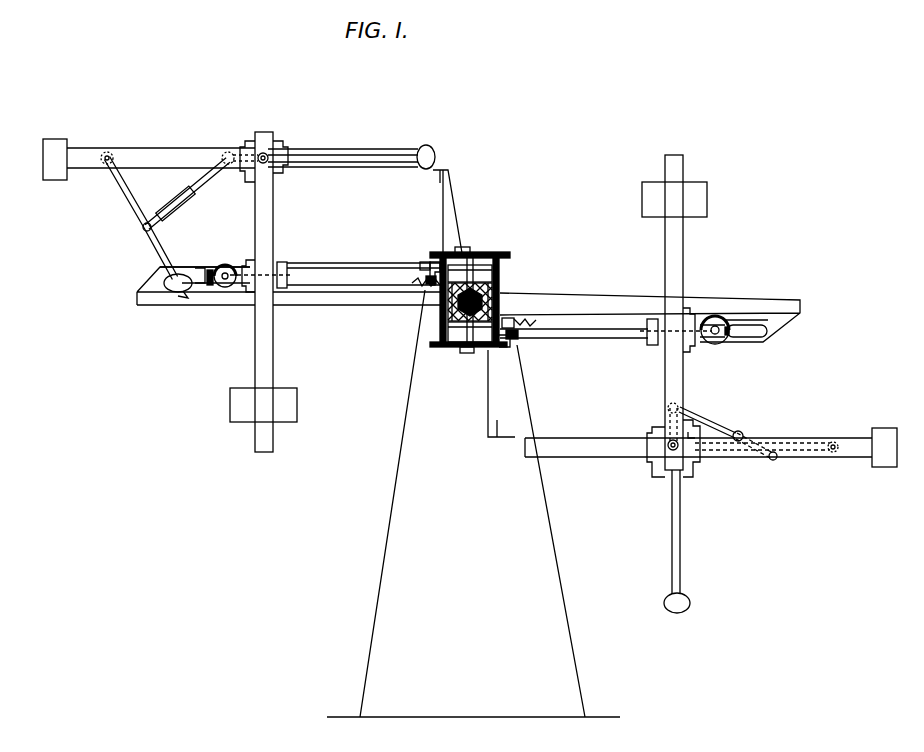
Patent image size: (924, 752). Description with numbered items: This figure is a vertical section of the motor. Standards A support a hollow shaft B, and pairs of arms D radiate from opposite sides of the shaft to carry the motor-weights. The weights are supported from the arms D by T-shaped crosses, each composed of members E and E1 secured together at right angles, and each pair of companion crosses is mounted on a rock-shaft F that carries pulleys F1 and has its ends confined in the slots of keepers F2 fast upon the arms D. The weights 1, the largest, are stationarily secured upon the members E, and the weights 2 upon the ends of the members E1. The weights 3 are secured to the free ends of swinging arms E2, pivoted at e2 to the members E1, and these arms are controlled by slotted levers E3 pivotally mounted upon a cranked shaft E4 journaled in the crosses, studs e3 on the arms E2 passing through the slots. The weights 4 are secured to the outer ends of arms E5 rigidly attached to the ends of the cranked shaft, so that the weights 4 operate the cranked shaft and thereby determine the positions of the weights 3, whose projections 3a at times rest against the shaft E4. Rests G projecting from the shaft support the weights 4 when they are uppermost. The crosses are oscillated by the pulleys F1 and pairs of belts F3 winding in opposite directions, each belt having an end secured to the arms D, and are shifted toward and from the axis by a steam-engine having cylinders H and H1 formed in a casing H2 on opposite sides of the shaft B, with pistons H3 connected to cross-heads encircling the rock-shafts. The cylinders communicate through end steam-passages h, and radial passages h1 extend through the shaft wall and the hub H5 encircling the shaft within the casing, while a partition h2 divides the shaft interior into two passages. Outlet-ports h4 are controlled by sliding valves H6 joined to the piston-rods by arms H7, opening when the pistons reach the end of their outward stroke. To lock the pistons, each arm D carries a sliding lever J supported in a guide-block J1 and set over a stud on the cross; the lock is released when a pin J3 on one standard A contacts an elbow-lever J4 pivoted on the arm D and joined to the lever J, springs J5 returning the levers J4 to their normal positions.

The standard A is at (473, 503).
The hollow shaft B is at (500, 270).
The arm D is at (468, 304).
The cross member E is at (273, 232).
The cross member E1 is at (182, 143).
The swinging arm E2 is at (120, 188).
The slotted lever E3 is at (190, 194).
The cranked shaft E4 is at (268, 154).
The arm E5 is at (346, 168).
The pivot e2 is at (108, 152).
The stud e3 is at (767, 417).
The rock-shaft F is at (213, 291).
The pulley F1 is at (215, 268).
The keeper F2 is at (187, 266).
The belt F3 is at (230, 289).
The rest G is at (443, 214).
The cylinder H is at (477, 268).
The cylinder H1 is at (460, 348).
The casing H2 is at (498, 297).
The piston H3 is at (363, 273).
The hub H5 is at (495, 255).
The sliding valve H6 is at (481, 252).
The arm H7 is at (430, 266).
The end steam-passage h is at (440, 307).
The radial passage h1 is at (448, 300).
The partition h2 is at (442, 323).
The outlet-port h4 is at (461, 251).
The sliding lever J is at (317, 264).
The guide-block J1 is at (285, 262).
The pin J3 is at (410, 284).
The elbow-lever J4 is at (418, 278).
The spring J5 is at (555, 353).
The weight 1 is at (468, 302).
The weight 2 is at (470, 303).
The weight 3 is at (711, 418).
The projection 3a is at (185, 294).
The weight 4 is at (553, 379).